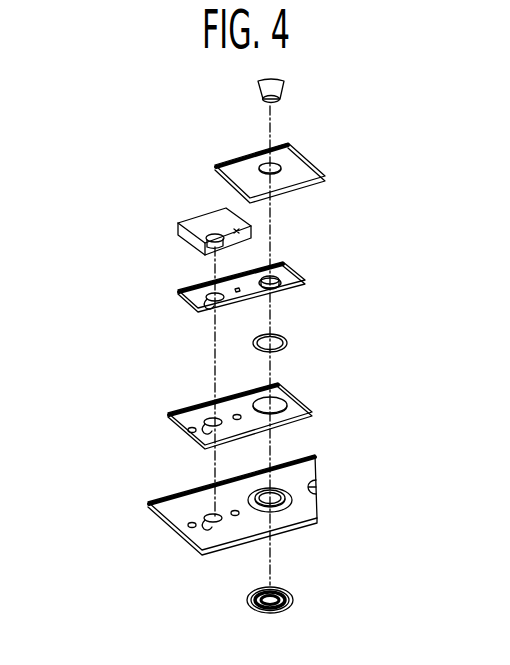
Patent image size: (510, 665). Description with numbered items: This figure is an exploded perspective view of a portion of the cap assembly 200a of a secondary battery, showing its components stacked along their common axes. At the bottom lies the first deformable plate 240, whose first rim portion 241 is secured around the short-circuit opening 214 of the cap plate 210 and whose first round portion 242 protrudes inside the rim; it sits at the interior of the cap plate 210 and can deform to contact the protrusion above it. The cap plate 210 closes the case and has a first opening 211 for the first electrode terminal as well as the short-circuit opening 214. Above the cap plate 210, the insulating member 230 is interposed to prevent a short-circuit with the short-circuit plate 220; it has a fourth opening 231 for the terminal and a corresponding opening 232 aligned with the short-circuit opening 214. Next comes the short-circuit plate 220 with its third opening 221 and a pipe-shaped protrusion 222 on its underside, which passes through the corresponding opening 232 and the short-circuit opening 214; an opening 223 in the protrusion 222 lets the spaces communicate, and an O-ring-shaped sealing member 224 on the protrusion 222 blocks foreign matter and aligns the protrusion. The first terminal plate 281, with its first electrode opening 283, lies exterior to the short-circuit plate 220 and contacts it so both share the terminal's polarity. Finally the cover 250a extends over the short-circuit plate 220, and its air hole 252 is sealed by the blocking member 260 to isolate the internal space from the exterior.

The cap assembly 200a is at (75, 88).
The cap plate 210 is at (325, 468).
The first opening 211 is at (205, 532).
The short-circuit opening 214 is at (278, 512).
The short-circuit plate 220 is at (303, 268).
The third opening 221 is at (195, 310).
The protrusion 222 is at (283, 283).
The opening 223 is at (274, 292).
The sealing member 224 is at (287, 337).
The insulating member 230 is at (313, 397).
The fourth opening 231 is at (200, 442).
The corresponding opening 232 is at (278, 413).
The first deformable plate 240 is at (296, 597).
The first rim portion 241 is at (251, 607).
The first round portion 242 is at (250, 594).
The cover 250a is at (321, 154).
The air hole 252 is at (281, 174).
The blocking member 260 is at (292, 75).
The first terminal plate 281 is at (191, 215).
The first electrode opening 283 is at (205, 246).